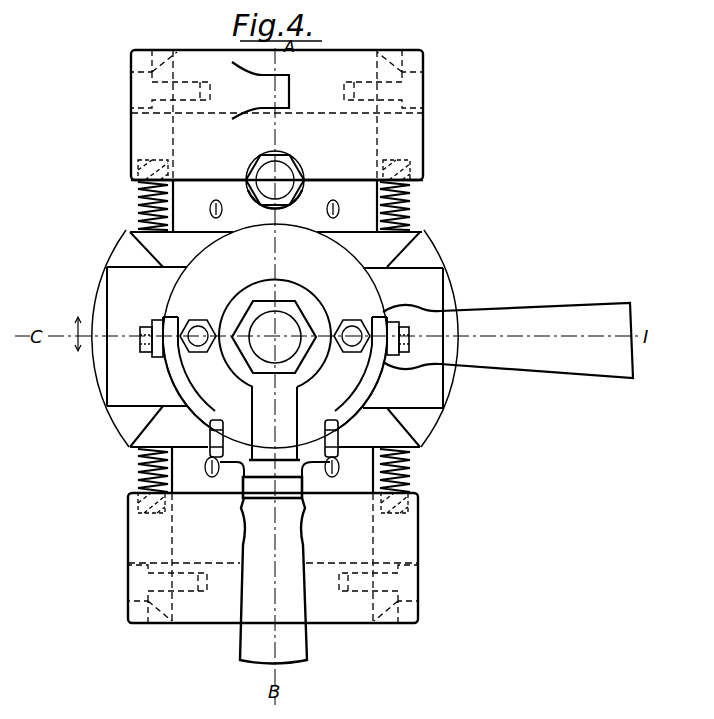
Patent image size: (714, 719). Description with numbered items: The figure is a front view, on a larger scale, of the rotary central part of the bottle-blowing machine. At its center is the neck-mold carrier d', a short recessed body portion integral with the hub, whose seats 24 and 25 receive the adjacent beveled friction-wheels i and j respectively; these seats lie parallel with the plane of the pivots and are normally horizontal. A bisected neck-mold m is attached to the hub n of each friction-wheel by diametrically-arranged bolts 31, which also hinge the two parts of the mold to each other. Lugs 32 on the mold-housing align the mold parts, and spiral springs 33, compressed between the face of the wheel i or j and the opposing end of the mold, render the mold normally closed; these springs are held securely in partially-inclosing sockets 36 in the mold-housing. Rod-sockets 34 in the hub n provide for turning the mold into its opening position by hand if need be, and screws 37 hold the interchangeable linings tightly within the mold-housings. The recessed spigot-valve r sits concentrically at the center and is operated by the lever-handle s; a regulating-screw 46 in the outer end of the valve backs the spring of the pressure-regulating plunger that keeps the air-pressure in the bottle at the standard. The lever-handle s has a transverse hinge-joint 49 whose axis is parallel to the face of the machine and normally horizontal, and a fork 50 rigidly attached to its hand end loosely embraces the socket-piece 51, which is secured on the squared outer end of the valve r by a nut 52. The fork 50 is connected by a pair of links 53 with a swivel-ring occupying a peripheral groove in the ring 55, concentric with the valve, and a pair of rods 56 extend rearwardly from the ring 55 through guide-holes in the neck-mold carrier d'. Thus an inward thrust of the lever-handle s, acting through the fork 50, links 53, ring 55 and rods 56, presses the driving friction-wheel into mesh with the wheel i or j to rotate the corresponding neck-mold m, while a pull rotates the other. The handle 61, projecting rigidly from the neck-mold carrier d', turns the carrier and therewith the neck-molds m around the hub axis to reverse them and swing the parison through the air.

The seat 24 is at (152, 264).
The seat 25 is at (275, 426).
The bolt 31 is at (277, 180).
The lug 32 is at (260, 90).
The spiral spring 33 is at (274, 337).
The rod-socket 34 is at (341, 472).
The socket 36 is at (138, 169).
The screw 37 is at (138, 96).
The regulating-screw 46 is at (275, 337).
The transverse hinge-joint 49 is at (203, 440).
The fork 50 is at (200, 402).
The socket-piece 51 is at (274, 418).
The nut 52 is at (274, 337).
The link 53 is at (156, 362).
The ring 55 is at (275, 336).
The rod 56 is at (202, 320).
The handle 61 is at (508, 340).
The neck-mold m is at (275, 336).
The hub n is at (274, 336).
The friction-wheel i is at (276, 243).
The friction-wheel j is at (275, 432).
The neck-mold carrier d' is at (275, 337).
The spigot-valve r is at (275, 301).
The lever-handle s is at (273, 570).